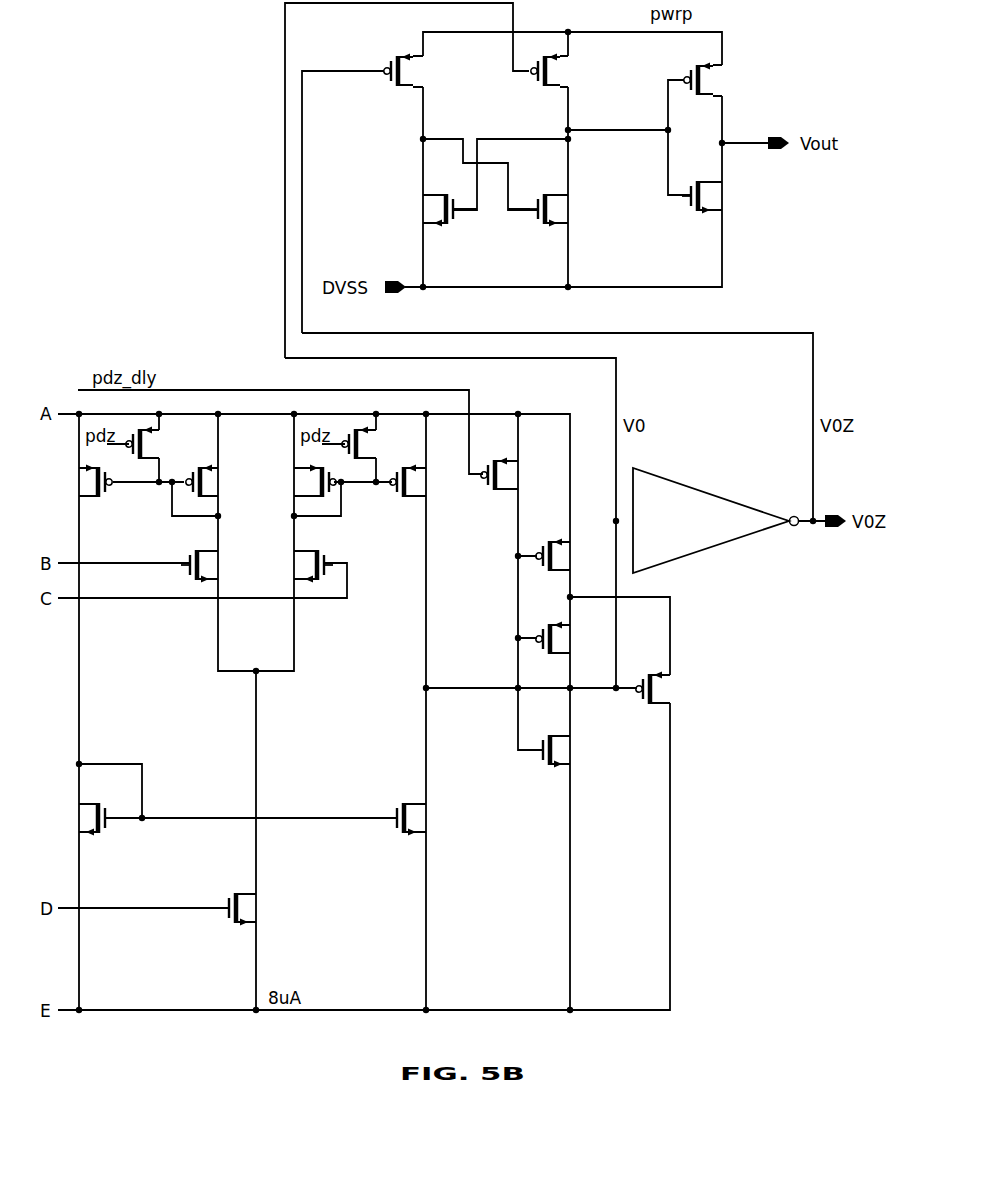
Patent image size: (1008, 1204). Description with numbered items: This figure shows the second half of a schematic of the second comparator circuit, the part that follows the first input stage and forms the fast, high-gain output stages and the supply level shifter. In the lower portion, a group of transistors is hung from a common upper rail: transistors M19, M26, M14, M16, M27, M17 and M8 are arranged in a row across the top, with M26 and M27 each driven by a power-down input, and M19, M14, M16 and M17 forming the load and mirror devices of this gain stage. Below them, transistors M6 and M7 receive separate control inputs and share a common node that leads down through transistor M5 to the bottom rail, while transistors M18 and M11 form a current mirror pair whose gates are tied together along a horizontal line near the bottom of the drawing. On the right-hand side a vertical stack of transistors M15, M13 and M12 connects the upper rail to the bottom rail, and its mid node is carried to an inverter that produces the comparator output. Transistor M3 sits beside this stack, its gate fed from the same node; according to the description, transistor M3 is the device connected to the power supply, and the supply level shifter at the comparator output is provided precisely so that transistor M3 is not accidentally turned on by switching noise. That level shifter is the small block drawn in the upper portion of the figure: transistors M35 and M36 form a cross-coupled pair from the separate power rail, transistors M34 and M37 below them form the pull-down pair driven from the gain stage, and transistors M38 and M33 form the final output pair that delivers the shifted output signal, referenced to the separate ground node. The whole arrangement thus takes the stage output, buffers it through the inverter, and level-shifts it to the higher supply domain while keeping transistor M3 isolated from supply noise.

The PMOS transistor M35 is at (420, 71).
The PMOS transistor M36 is at (566, 71).
The PMOS transistor M38 is at (719, 80).
The NMOS transistor M34 is at (404, 200).
The NMOS transistor M37 is at (578, 200).
The NMOS transistor M33 is at (746, 197).
The PMOS transistor M19 is at (77, 481).
The PMOS transistor M26 is at (149, 443).
The PMOS transistor M14 is at (218, 481).
The PMOS transistor M16 is at (298, 481).
The PMOS transistor M27 is at (366, 443).
The PMOS transistor M17 is at (426, 481).
The PMOS transistor M8 is at (511, 474).
The NMOS transistor M6 is at (209, 566).
The NMOS transistor M7 is at (300, 566).
The PMOS transistor M15 is at (570, 555).
The PMOS transistor M13 is at (570, 638).
The transistor M3 is at (666, 688).
The NMOS transistor M12 is at (569, 751).
The NMOS transistor M18 is at (92, 819).
The NMOS transistor M11 is at (424, 819).
The NMOS transistor M5 is at (250, 909).